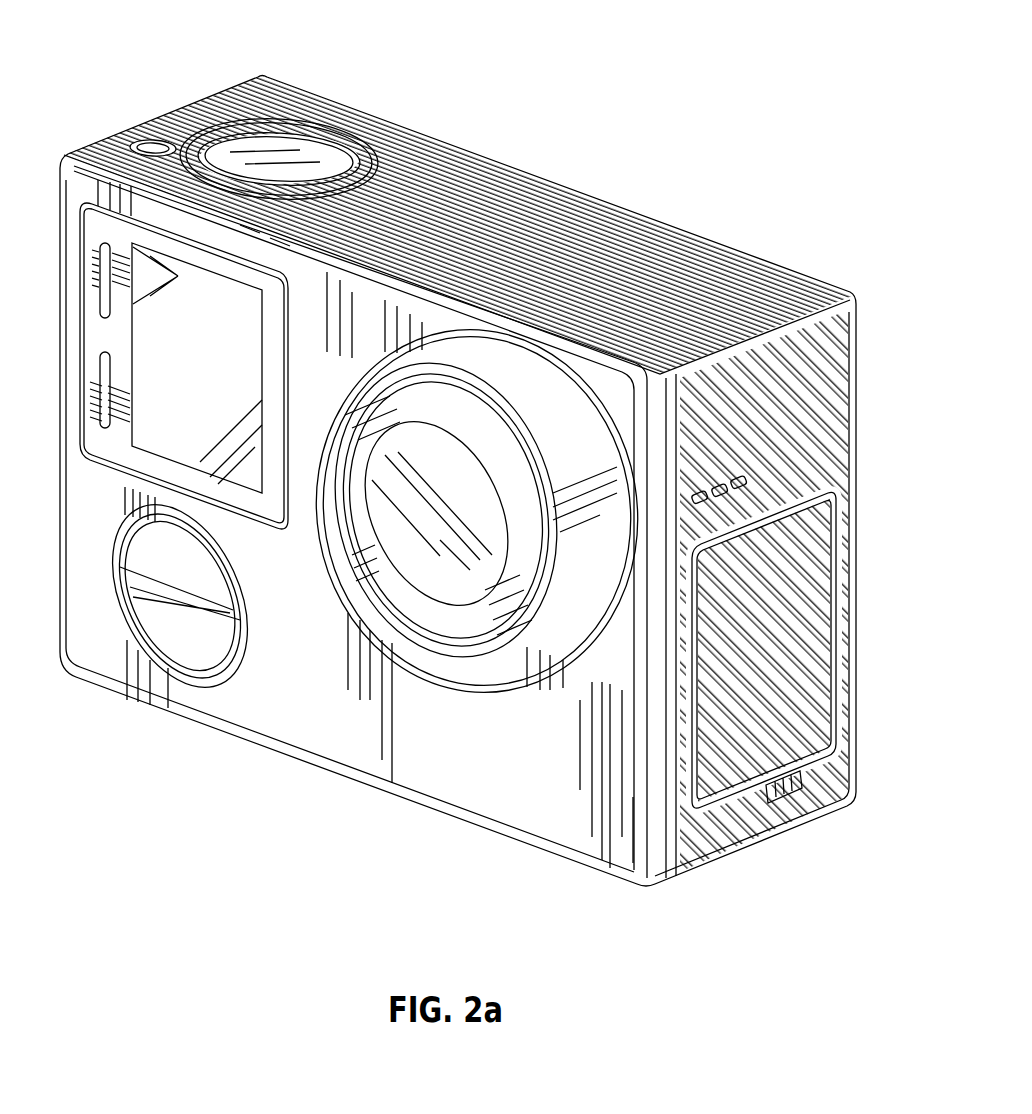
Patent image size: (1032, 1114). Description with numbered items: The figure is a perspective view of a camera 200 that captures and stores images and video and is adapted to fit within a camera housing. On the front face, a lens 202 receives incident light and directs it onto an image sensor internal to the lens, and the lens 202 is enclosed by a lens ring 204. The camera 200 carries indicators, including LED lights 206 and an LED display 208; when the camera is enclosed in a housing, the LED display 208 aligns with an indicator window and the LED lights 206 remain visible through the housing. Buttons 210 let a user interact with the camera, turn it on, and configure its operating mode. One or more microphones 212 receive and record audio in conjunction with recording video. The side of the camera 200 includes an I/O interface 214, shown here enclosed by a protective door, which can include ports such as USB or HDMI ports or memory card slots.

The camera 200 is at (476, 449).
The lens 202 is at (425, 568).
The lens ring 204 is at (541, 629).
The LED lights 206 is at (95, 293).
The LED display 208 is at (207, 378).
The buttons 210 is at (306, 154).
The microphones 212 is at (742, 478).
The I/O interface 214 is at (791, 676).